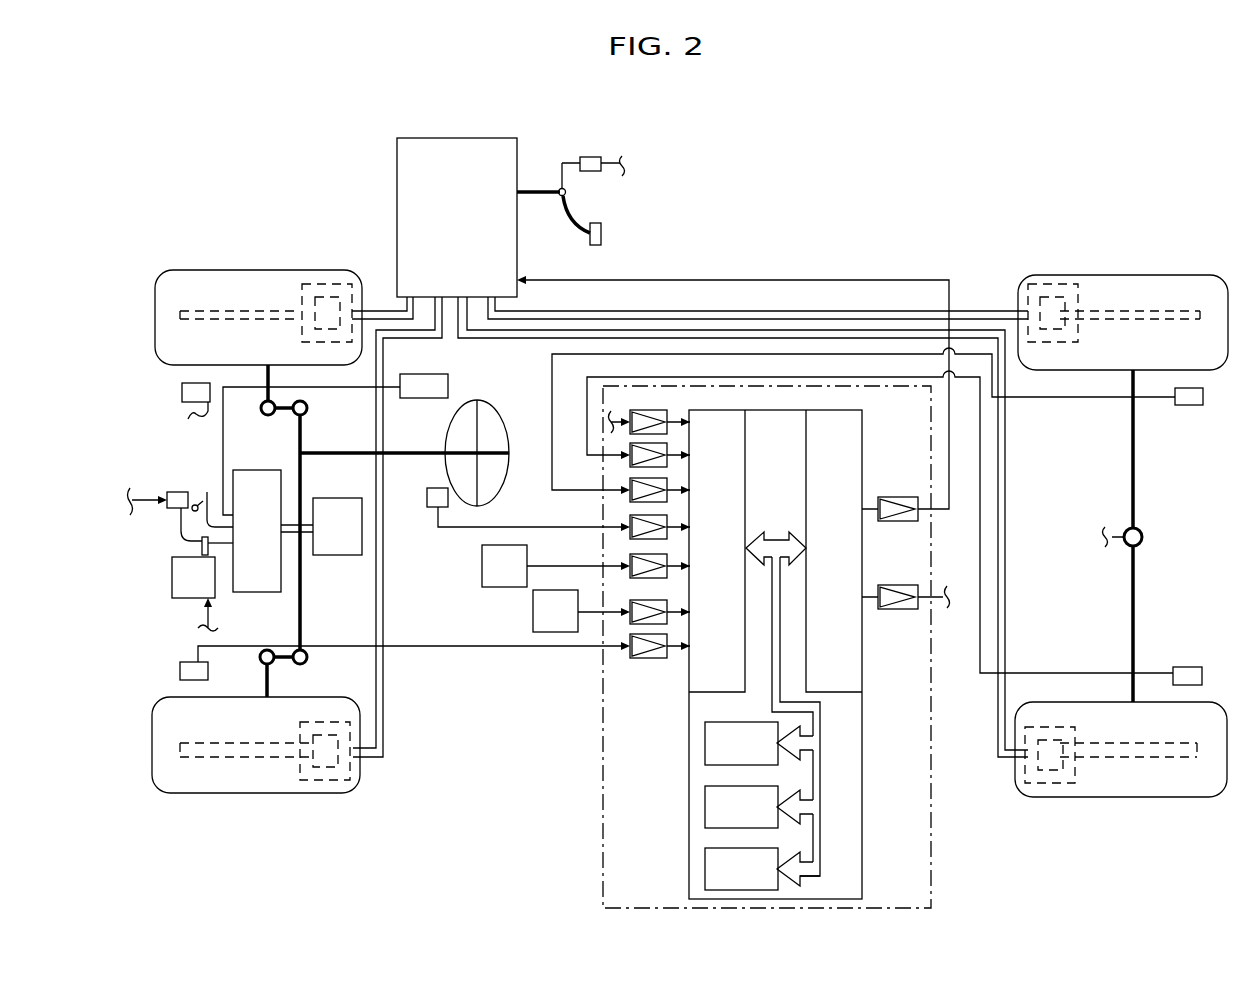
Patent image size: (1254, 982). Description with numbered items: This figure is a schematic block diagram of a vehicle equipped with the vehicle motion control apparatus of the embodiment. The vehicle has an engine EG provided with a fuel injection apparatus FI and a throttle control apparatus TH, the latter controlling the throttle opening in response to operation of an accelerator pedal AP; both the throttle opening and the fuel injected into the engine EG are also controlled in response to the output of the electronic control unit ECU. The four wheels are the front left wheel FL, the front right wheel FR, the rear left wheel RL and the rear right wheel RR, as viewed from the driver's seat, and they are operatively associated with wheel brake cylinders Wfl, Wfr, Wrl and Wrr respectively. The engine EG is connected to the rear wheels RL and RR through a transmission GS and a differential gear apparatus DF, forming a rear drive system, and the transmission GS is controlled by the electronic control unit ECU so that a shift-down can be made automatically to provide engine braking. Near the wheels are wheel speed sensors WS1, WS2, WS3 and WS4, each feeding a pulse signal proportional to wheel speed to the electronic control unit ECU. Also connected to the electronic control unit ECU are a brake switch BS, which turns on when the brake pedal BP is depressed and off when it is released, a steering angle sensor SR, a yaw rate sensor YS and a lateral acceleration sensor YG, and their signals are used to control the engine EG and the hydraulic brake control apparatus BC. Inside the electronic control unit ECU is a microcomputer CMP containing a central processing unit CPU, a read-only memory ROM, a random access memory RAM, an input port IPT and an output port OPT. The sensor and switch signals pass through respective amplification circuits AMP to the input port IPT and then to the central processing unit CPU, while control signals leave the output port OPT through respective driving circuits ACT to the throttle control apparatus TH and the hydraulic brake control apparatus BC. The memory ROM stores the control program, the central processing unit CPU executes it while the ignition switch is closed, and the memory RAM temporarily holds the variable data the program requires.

The hydraulic brake control apparatus BC is at (397, 183).
The brake switch BS is at (590, 157).
The brake pedal BP is at (576, 218).
The wheel FR is at (188, 270).
The wheel brake cylinder Wfr is at (332, 272).
The wheel brake cylinder Wrr is at (1037, 280).
The wheel RR is at (1142, 275).
The wheel speed sensor WS2 is at (182, 392).
The accelerator pedal AP is at (448, 380).
The wheel speed sensor WS4 is at (1184, 405).
The throttle control apparatus TH is at (167, 492).
The engine EG is at (272, 481).
The transmission GS is at (321, 526).
The steering angle sensor SR is at (428, 498).
The input port IPT is at (737, 452).
The output port OPT is at (855, 452).
The driving circuit ACT is at (890, 497).
The differential gear apparatus DF is at (1143, 531).
The fuel injection apparatus FI is at (202, 584).
The yaw rate sensor YS is at (556, 566).
The lateral acceleration sensor YG is at (581, 611).
The wheel speed sensor WS3 is at (1195, 667).
The wheel speed sensor WS1 is at (180, 672).
The wheel FL is at (187, 793).
The wheel brake cylinder Wfl is at (334, 794).
The amplification circuit AMP is at (640, 659).
The electronic control unit ECU is at (601, 790).
The central processing unit CPU is at (759, 743).
The read-only memory ROM is at (759, 807).
The random access memory RAM is at (762, 869).
The microcomputer CMP is at (861, 823).
The wheel brake cylinder Wrl is at (1037, 783).
The wheel RL is at (1143, 797).